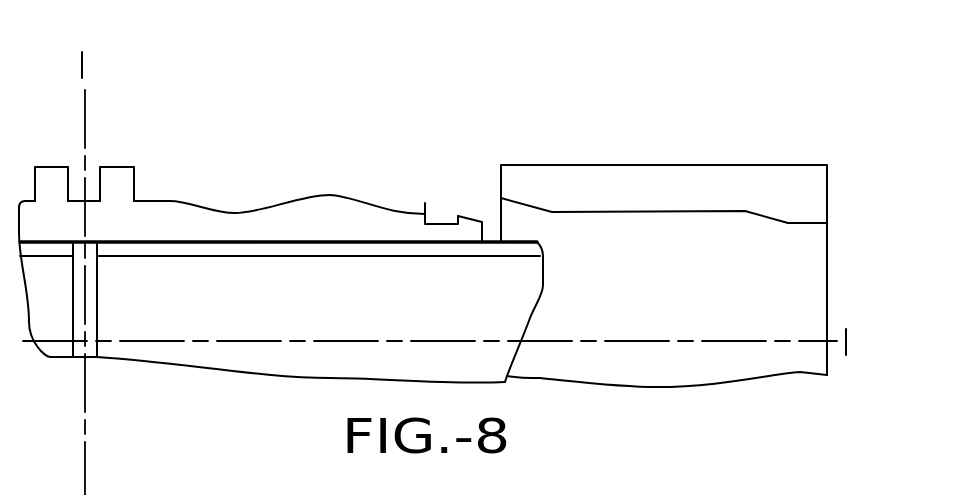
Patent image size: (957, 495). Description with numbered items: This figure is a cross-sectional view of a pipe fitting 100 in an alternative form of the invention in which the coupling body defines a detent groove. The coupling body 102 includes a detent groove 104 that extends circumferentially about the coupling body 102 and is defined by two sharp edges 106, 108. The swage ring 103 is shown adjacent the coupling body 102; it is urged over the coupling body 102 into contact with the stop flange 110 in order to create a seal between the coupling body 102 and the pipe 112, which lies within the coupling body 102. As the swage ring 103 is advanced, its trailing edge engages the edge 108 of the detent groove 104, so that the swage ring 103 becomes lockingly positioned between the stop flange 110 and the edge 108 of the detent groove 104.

The pipe fitting 100 is at (552, 56).
The coupling body 102 is at (170, 200).
The swage ring 103 is at (683, 165).
The detent groove 104 is at (417, 206).
The sharp edge 106 is at (425, 203).
The sharp edge 108 is at (462, 211).
The stop flange 110 is at (111, 167).
The pipe 112 is at (544, 249).